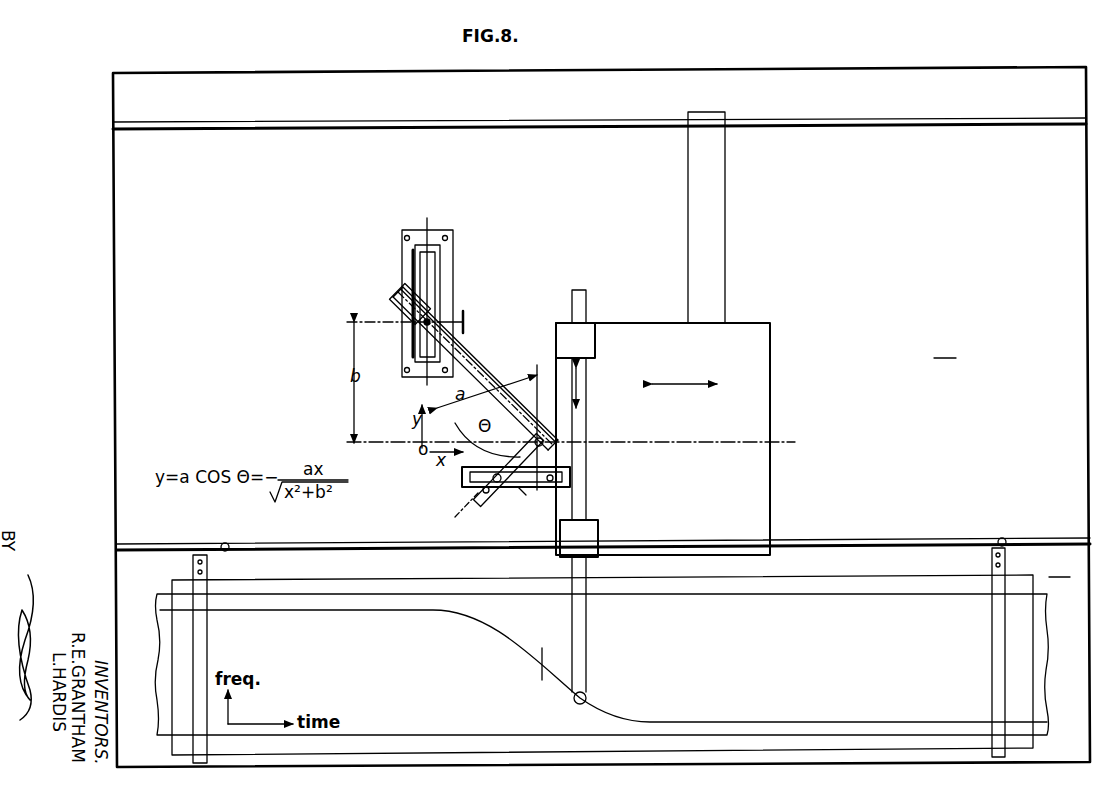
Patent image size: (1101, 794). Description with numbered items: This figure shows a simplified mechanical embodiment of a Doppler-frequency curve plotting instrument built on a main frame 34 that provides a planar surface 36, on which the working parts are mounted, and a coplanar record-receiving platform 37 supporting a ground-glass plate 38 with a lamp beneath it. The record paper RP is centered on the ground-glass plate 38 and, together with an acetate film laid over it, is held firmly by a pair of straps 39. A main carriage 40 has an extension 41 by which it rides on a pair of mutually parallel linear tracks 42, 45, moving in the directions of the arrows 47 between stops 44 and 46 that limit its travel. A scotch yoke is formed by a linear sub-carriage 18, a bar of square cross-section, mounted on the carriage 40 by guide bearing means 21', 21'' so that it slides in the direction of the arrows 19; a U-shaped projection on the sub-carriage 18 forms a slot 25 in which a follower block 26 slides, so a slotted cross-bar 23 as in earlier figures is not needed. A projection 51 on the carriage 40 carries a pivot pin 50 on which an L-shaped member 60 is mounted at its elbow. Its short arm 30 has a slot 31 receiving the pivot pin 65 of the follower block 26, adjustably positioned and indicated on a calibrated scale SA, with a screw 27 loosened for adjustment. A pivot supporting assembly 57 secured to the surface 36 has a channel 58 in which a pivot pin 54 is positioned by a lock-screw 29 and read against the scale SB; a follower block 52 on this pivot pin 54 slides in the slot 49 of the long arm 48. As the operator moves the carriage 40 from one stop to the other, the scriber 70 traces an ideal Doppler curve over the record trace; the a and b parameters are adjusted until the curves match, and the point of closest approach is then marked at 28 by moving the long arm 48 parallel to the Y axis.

The main frame 34 is at (110, 348).
The linear track 42 is at (870, 128).
The linear track 45 is at (905, 540).
The extension 41 is at (727, 250).
The main carriage 40 is at (772, 402).
The planar surface 36 is at (945, 349).
The arrows 47 is at (692, 386).
The guide bearing means 21'' is at (598, 345).
The guide bearing means 21' is at (600, 534).
The linear sub-carriage 18 is at (587, 494).
The arrows 19 is at (580, 400).
The scriber 70 is at (588, 697).
The straps 39 is at (208, 656).
The stop 46 is at (228, 543).
The stop 44 is at (1005, 538).
The ground-glass plate 38 is at (916, 582).
The record-receiving platform 37 is at (1060, 567).
The record paper RP is at (1047, 702).
The mark of point of closest approach 28 is at (540, 674).
The pivot supporting assembly 57 is at (456, 247).
The channel 58 is at (431, 276).
The calibrated scale SB is at (413, 272).
The pivot pin 54 is at (435, 318).
The lock-screw 29 is at (468, 320).
The L-shaped member 60 is at (470, 343).
The long arm 48 is at (398, 298).
The follower block 52 is at (430, 326).
The slot 49 is at (478, 372).
The pivot pin 50 is at (550, 444).
The slotted cross-bar 23 is at (462, 488).
The slot 25 is at (551, 486).
The pivot pin 65 is at (463, 482).
The projection 51 is at (522, 438).
The calibrated scale SA is at (480, 440).
The follower block 26 is at (500, 492).
The short arm 30 is at (483, 490).
The slot 31 is at (491, 502).
The screw 27 is at (524, 495).